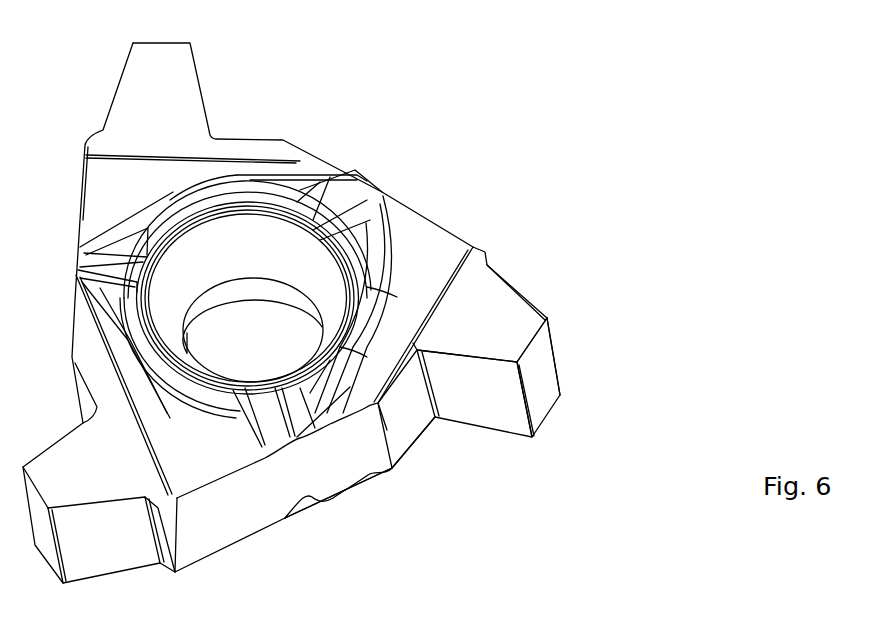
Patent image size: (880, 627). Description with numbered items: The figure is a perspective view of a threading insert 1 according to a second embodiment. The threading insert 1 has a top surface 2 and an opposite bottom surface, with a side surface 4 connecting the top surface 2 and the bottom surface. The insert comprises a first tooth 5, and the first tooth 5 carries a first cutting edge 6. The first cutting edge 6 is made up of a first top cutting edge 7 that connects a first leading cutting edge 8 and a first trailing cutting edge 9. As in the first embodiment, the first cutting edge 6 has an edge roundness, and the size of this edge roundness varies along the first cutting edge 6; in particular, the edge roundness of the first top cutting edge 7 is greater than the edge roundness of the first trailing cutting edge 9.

The threading insert 1 is at (603, 157).
The top surface 2 is at (292, 190).
The side surface 4 is at (320, 465).
The first tooth 5 is at (470, 312).
The first cutting edge 6 is at (510, 363).
The first top cutting edge 7 is at (528, 345).
The first leading cutting edge 8 is at (468, 357).
The first trailing cutting edge 9 is at (515, 292).